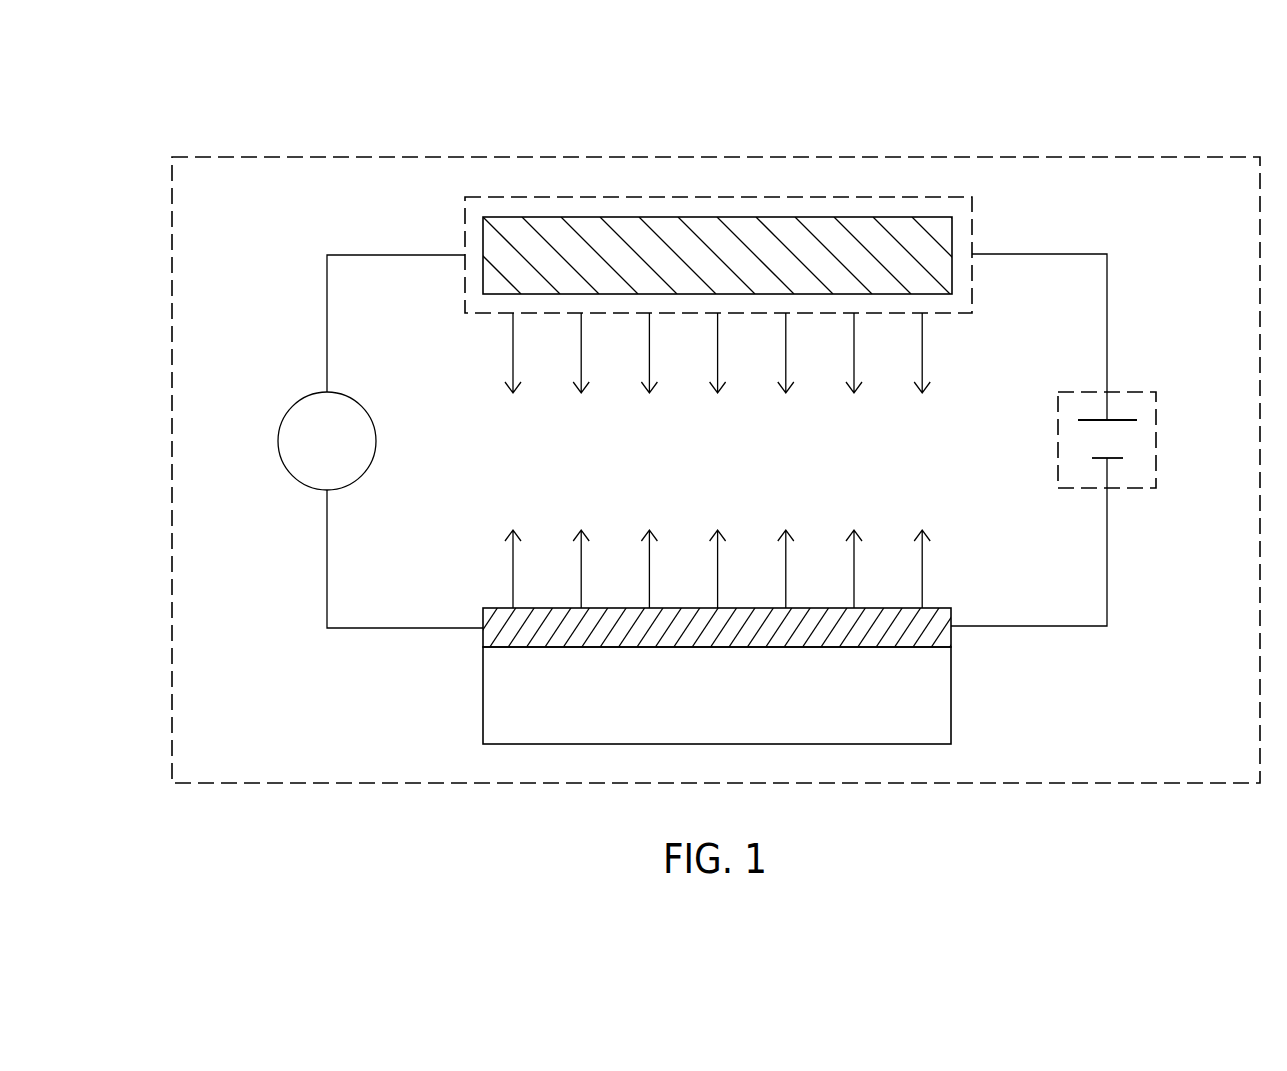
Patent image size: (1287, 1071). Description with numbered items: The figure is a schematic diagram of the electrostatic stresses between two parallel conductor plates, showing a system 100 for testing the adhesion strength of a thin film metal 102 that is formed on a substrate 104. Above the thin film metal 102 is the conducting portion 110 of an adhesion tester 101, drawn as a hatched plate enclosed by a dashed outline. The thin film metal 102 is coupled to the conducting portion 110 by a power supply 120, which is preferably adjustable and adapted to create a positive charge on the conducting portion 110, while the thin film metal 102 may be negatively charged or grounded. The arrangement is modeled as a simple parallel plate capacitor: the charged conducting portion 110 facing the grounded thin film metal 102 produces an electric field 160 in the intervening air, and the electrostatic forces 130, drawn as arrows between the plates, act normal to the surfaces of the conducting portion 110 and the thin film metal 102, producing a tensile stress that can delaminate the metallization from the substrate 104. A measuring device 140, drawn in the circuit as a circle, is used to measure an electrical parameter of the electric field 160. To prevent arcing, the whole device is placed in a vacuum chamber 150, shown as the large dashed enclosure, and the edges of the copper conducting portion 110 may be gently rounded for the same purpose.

The system 100 is at (1127, 97).
The adhesion tester 101 is at (562, 207).
The thin film metal 102 is at (952, 635).
The substrate 104 is at (740, 712).
The conducting portion 110 is at (775, 235).
The power supply 120 is at (1155, 439).
The electrostatic forces 130 is at (510, 375).
The measuring device 140 is at (277, 442).
The vacuum chamber 150 is at (1254, 768).
The electric field 160 is at (853, 450).